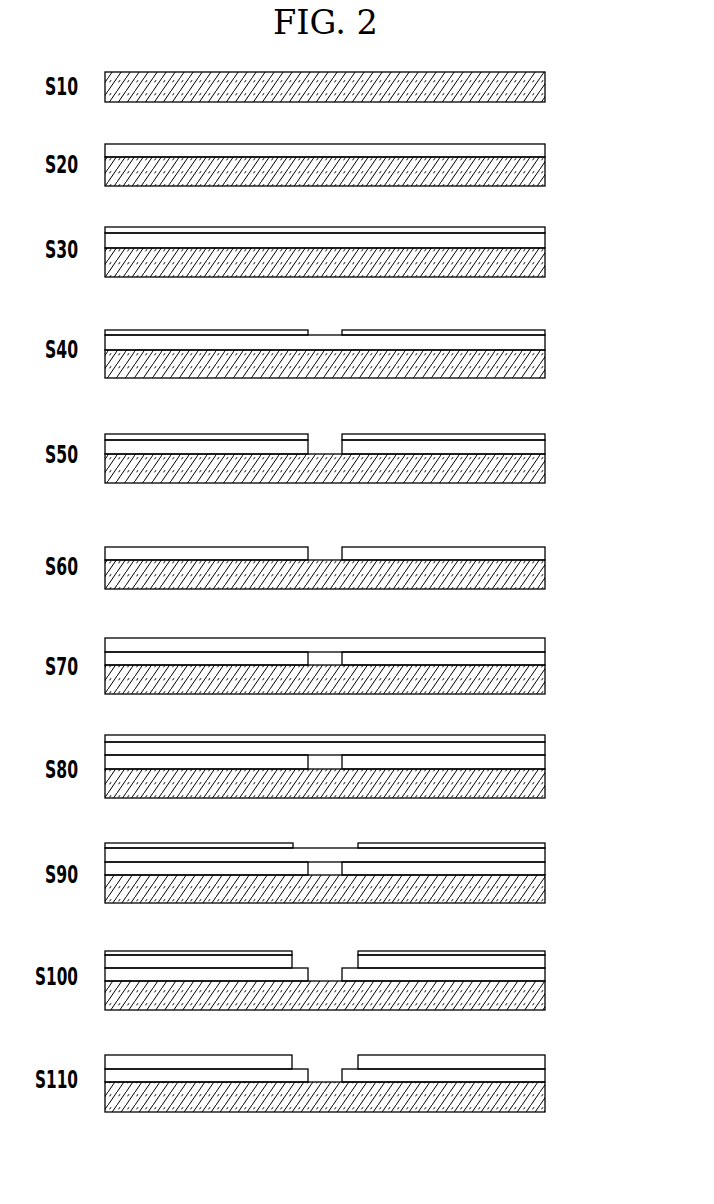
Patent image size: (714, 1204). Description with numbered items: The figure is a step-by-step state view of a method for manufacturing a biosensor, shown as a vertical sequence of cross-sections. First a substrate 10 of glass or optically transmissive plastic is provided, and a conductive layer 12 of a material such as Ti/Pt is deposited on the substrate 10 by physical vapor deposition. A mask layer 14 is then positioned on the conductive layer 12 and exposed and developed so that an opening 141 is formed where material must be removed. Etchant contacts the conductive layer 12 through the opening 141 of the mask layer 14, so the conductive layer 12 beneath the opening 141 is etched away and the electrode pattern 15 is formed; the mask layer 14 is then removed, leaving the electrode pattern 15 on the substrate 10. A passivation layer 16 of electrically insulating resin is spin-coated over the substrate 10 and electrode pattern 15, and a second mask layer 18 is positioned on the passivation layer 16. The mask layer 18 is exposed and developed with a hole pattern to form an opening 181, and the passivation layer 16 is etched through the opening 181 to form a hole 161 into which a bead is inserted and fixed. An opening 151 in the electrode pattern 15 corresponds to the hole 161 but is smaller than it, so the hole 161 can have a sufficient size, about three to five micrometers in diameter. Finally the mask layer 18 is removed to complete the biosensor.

The substrate 10 is at (545, 87).
The conductive layer 12 is at (545, 150).
The mask layer 14 is at (545, 229).
The opening 141 is at (312, 330).
The electrode pattern 15 is at (545, 553).
The opening 151 is at (312, 1072).
The passivation layer 16 is at (545, 645).
The hole 161 is at (325, 978).
The mask layer 18 is at (545, 738).
The opening 181 is at (296, 846).